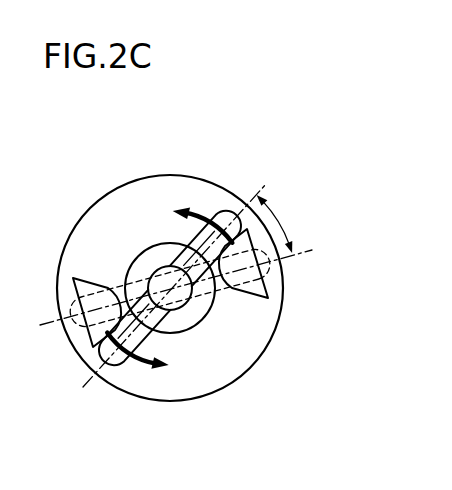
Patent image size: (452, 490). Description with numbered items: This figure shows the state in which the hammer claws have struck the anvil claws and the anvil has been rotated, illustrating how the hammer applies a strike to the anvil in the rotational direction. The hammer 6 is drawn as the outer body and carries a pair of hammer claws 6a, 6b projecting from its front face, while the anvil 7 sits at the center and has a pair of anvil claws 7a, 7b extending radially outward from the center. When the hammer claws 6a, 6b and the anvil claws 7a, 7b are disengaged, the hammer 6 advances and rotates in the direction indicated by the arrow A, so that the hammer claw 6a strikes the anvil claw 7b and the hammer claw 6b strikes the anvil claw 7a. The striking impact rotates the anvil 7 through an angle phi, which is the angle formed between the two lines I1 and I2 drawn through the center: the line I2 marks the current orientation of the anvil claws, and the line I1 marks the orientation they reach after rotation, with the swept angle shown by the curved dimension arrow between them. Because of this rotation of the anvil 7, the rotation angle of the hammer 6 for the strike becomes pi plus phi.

The hammer 6 is at (122, 212).
The hammer claw 6a is at (258, 300).
The hammer claw 6b is at (82, 273).
The anvil 7 is at (147, 265).
The anvil claw 7a is at (116, 365).
The anvil claw 7b is at (226, 210).
The arrow A is at (180, 208).
The line l1 I1 is at (307, 253).
The line l2 I2 is at (268, 178).